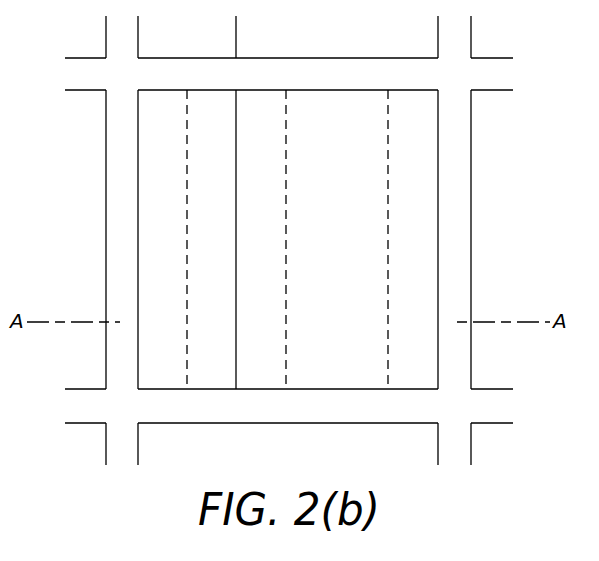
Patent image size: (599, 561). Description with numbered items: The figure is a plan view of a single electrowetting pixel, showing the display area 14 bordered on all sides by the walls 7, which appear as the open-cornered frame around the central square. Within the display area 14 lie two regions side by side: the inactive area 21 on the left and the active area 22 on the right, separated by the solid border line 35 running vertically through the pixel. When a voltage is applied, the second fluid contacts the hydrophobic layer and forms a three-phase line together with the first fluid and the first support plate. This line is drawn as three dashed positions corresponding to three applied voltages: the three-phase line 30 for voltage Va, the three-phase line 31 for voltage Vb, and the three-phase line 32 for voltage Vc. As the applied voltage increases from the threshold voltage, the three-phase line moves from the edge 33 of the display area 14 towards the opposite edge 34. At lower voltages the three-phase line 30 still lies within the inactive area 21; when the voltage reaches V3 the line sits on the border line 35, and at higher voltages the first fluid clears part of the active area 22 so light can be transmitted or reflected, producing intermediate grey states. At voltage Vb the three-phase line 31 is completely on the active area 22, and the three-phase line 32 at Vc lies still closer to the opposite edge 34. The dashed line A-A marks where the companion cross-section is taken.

The walls 7 is at (73, 405).
The display area 14 is at (303, 373).
The inactive area 21 is at (162, 375).
The active area 22 is at (375, 375).
The three-phase line 30 is at (187, 260).
The three-phase line 31 is at (286, 212).
The three-phase line 32 is at (388, 262).
The edge of the display area 33 is at (138, 242).
The opposite edge 34 is at (438, 240).
The border line 35 is at (237, 145).